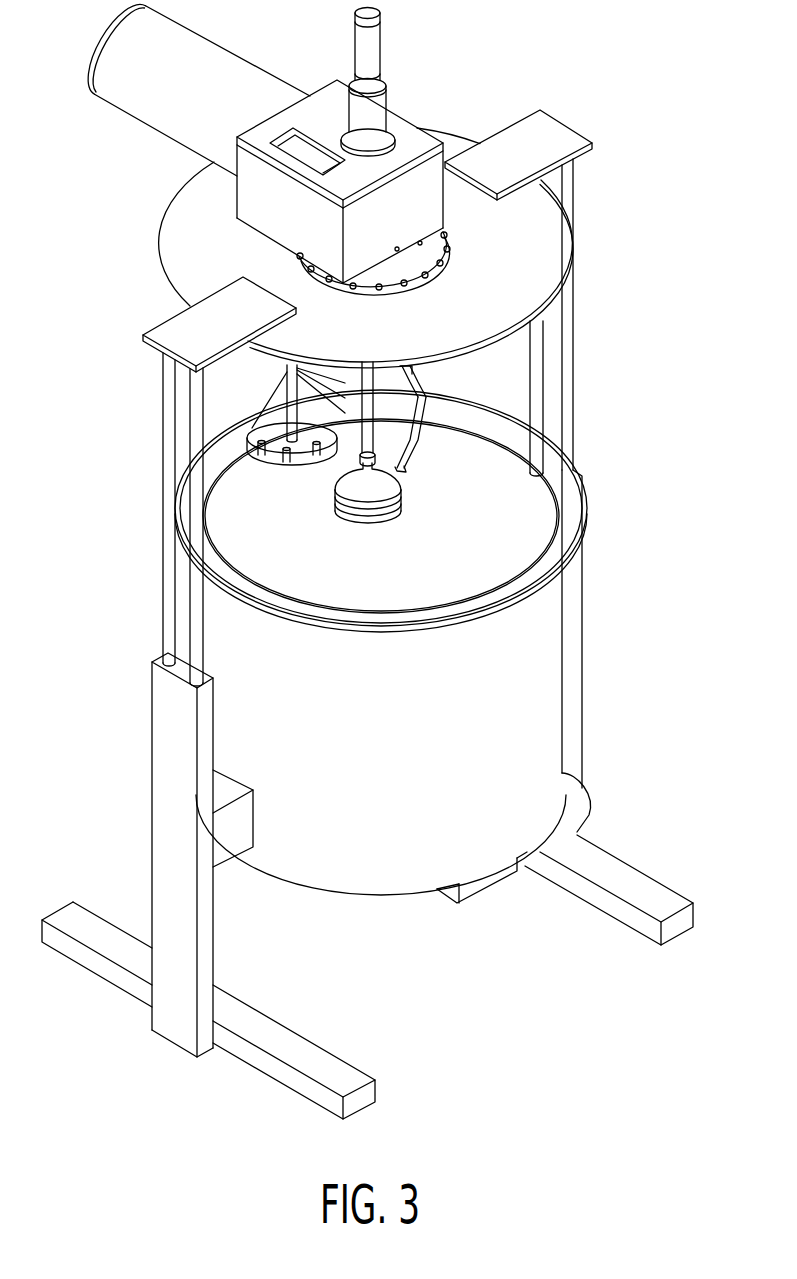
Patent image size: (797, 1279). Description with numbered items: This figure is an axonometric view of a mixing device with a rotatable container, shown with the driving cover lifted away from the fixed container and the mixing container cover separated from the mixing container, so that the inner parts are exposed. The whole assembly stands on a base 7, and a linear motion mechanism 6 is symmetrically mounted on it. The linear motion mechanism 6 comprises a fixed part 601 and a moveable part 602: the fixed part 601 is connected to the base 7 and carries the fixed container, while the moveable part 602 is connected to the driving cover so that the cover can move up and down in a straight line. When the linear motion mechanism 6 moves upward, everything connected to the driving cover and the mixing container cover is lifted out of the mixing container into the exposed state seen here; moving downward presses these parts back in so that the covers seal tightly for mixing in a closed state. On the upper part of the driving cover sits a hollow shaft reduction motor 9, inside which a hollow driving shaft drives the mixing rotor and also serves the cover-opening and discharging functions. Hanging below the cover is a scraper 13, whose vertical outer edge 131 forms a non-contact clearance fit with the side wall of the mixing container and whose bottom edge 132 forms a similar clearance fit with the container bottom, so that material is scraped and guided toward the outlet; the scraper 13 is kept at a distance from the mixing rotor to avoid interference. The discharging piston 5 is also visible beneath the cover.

The hollow shaft reduction motor 9 is at (237, 145).
The moveable part 602 is at (175, 323).
The linear motion mechanism 6 is at (175, 828).
The fixed part 601 is at (227, 837).
The base 7 is at (652, 895).
The scraper 13 is at (551, 439).
The vertical outer edge 131 is at (404, 372).
The bottom edge 132 is at (405, 459).
The discharging piston 5 is at (380, 492).